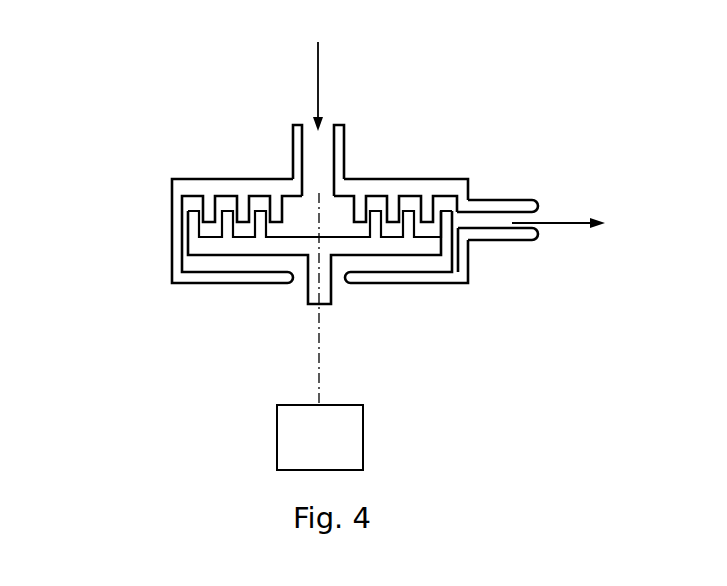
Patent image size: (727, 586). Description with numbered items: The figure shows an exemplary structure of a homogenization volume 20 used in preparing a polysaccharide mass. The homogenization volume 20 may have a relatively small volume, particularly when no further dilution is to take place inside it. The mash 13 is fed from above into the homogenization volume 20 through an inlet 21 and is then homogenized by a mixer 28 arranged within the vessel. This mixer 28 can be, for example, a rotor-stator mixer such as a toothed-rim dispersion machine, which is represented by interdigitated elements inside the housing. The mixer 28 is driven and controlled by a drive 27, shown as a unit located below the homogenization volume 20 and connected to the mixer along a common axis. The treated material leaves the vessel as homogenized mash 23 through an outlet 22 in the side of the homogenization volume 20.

The mash 13 is at (320, 67).
The homogenization volume 20 is at (176, 197).
The inlet in the homogenization volume for mash 21 is at (344, 150).
The outlet in the homogenization volume for homogenized mash 22 is at (507, 204).
The homogenized mash 23 is at (550, 226).
The drive for mixer in the homogenization volume 27 is at (362, 430).
The mixer in the homogenization volume 28 is at (232, 243).